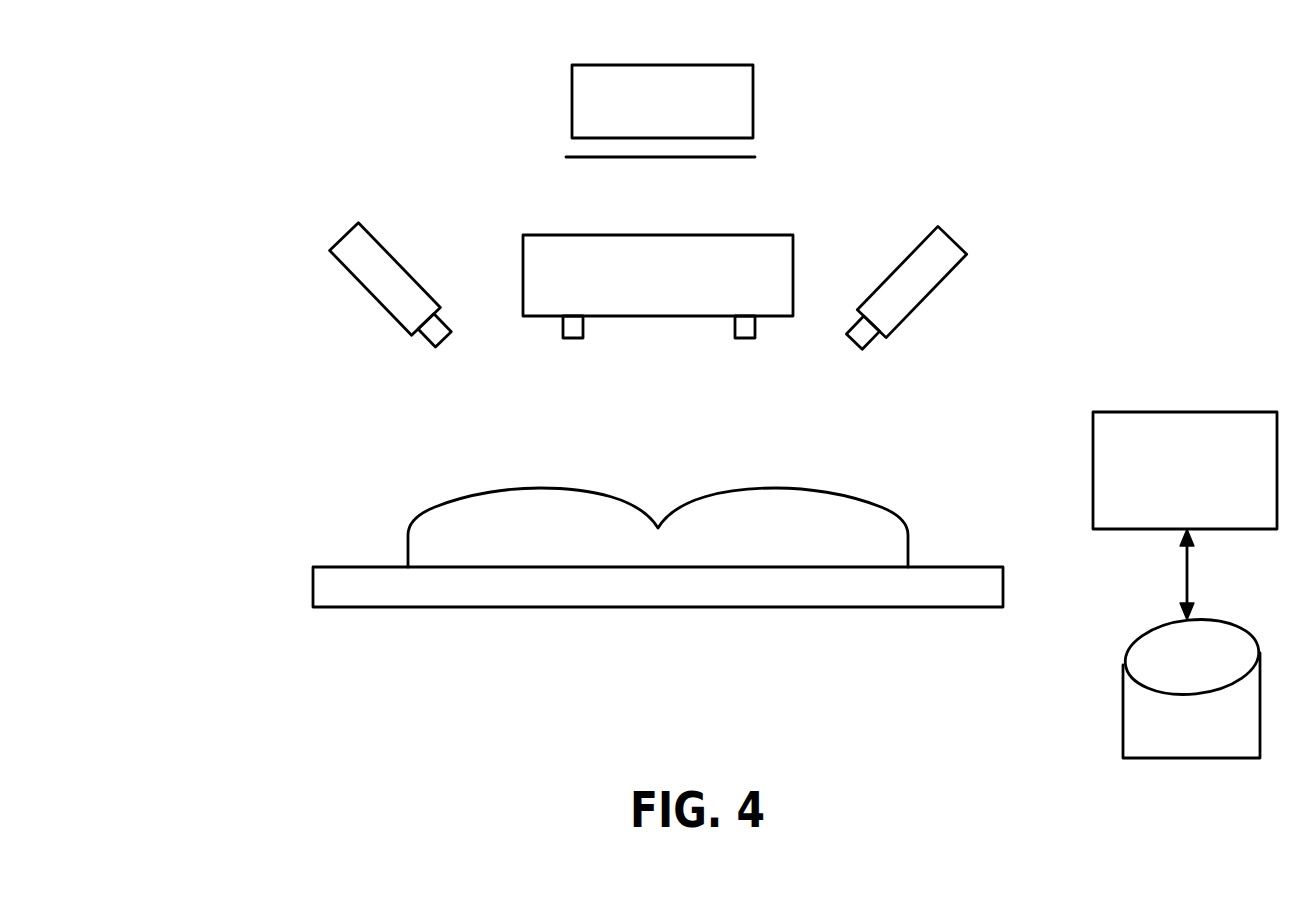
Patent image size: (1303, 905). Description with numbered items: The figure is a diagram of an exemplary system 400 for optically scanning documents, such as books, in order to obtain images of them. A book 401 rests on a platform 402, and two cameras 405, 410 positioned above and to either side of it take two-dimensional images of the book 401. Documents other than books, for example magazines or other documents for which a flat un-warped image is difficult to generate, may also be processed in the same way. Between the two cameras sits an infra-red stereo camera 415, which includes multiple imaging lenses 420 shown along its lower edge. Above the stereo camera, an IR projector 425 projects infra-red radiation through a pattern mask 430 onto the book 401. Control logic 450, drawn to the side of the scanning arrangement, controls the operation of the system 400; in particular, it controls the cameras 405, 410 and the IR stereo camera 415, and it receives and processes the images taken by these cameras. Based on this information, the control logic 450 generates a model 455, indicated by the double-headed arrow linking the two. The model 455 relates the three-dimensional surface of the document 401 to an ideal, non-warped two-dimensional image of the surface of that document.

The system 400 is at (121, 131).
The book 401 is at (447, 500).
The platform 402 is at (995, 566).
The camera 405 is at (333, 244).
The camera 410 is at (929, 228).
The infra-red stereo camera 415 is at (523, 235).
The imaging lenses 420 is at (563, 338).
The IR projector 425 is at (572, 65).
The pattern mask 430 is at (566, 157).
The control logic 450 is at (1093, 412).
The model 455 is at (1126, 655).